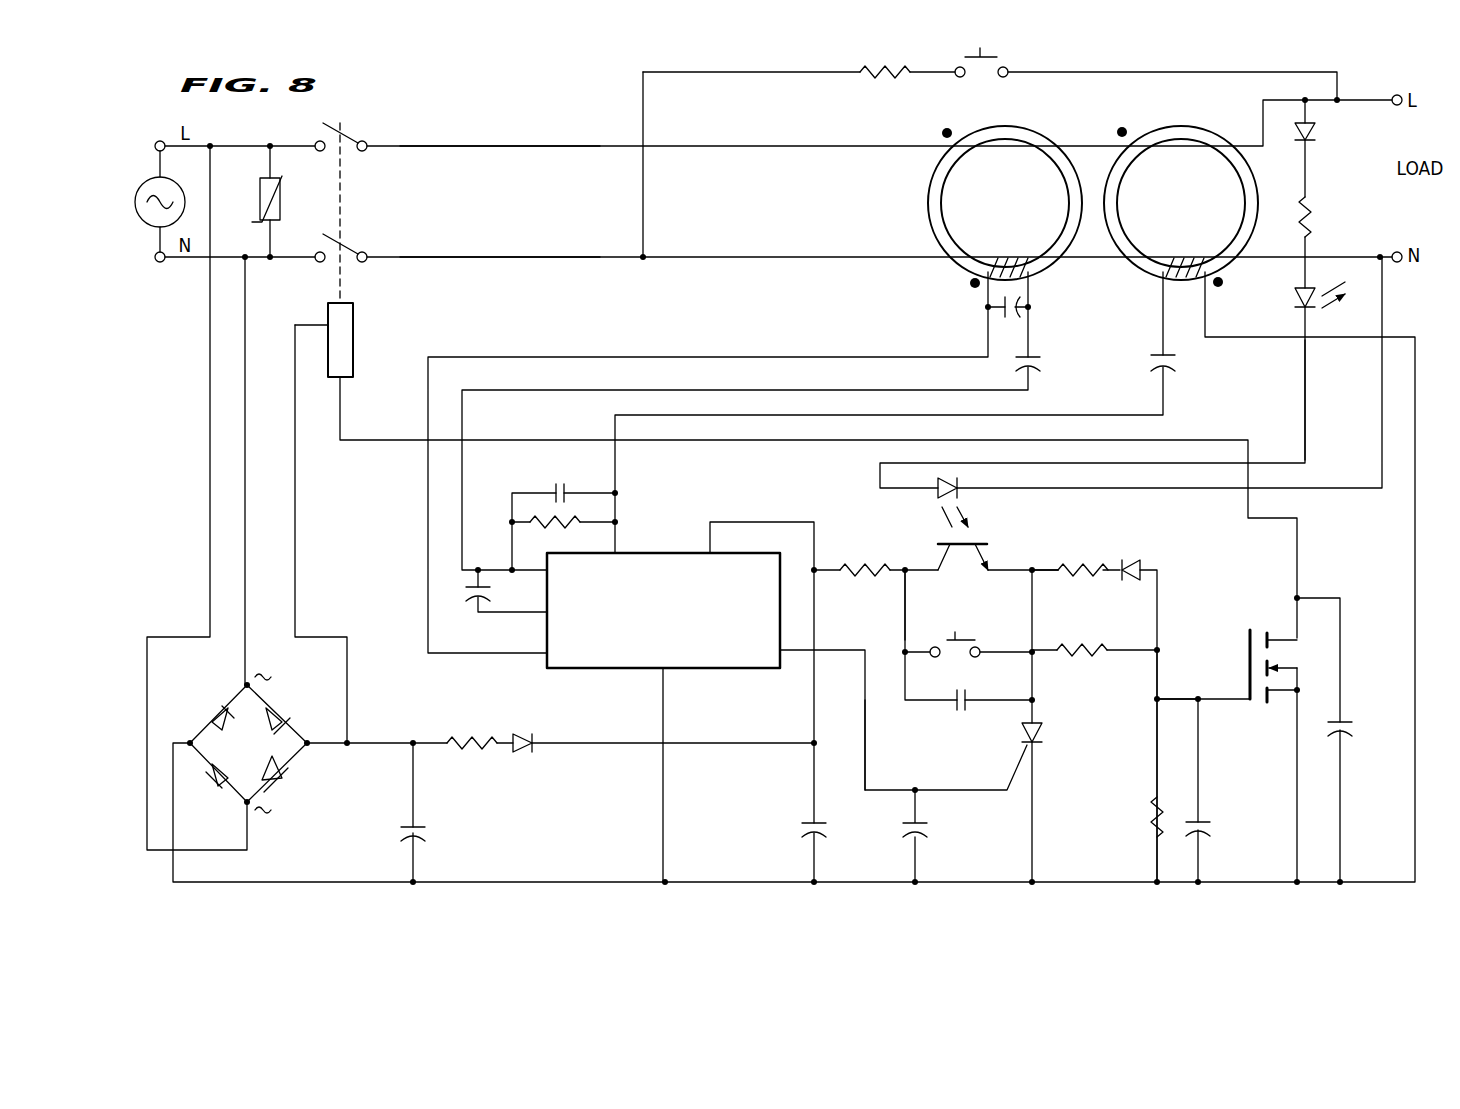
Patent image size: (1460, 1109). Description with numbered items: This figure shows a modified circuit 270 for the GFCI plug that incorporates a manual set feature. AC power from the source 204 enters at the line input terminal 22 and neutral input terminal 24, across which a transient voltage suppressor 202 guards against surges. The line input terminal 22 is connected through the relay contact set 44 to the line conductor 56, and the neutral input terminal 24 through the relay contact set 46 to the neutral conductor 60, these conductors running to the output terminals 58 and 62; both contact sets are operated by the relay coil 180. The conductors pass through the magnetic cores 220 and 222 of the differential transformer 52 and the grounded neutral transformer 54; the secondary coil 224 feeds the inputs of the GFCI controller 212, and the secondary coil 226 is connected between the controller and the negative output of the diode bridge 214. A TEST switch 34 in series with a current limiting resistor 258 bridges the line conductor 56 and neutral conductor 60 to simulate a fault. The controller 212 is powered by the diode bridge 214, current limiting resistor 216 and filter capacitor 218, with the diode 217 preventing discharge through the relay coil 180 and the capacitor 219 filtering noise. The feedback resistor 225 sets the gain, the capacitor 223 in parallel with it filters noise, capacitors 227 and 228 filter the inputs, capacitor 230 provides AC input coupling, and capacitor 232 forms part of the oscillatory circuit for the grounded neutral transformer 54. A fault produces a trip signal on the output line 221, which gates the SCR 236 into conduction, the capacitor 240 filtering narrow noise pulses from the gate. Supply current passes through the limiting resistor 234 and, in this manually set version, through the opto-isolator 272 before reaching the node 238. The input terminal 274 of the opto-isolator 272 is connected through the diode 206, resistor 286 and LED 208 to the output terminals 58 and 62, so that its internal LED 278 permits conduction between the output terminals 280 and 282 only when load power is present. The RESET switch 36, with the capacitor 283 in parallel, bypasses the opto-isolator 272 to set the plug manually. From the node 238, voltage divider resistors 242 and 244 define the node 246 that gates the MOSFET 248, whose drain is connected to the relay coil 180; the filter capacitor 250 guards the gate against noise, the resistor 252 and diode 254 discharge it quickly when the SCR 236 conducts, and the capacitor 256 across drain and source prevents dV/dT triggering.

The line input terminal 22 is at (152, 146).
The neutral input terminal 24 is at (156, 263).
The AC source 204 is at (142, 221).
The transient voltage suppressor 202 is at (260, 198).
The relay contact set 44 is at (373, 128).
The relay contact set 46 is at (363, 235).
The line conductor 56 is at (483, 148).
The neutral conductor 60 is at (514, 256).
The modified circuit 270 is at (526, 98).
The relay coil 180 is at (353, 324).
The current limiting resistor 258 is at (875, 82).
The TEST switch 34 is at (1005, 78).
The differential transformer 52 is at (920, 203).
The grounded neutral transformer 54 is at (1205, 123).
The output terminal 58 is at (1395, 94).
The output terminal 62 is at (1397, 263).
The diode 206 is at (1316, 132).
The resistor 286 is at (1316, 215).
The LED 208 is at (1296, 306).
The magnetic core 220 is at (955, 170).
The magnetic core 222 is at (1125, 164).
The secondary coil 224 is at (1018, 260).
The secondary coil 226 is at (1184, 261).
The capacitor 227 is at (1022, 310).
The capacitor 230 is at (1042, 368).
The capacitor 232 is at (1158, 354).
The input terminal 274 is at (1303, 388).
The capacitor 223 is at (550, 484).
The feedback resistor 225 is at (538, 526).
The GFCI controller 212 is at (662, 552).
The capacitor 228 is at (476, 604).
The opto-isolator 272 is at (925, 528).
The LED 278 is at (960, 493).
The output terminal 280 is at (992, 567).
The resistor 252 is at (1090, 560).
The diode 254 is at (1136, 558).
The MOSFET 248 is at (1253, 617).
The limiting resistor 234 is at (868, 576).
The output terminal 282 is at (932, 572).
The RESET switch 36 is at (970, 638).
The node 238 is at (1046, 575).
The node 246 is at (1160, 697).
The resistor 242 is at (1097, 662).
The silicon controlled rectifier 236 is at (1043, 736).
The output line 221 is at (865, 764).
The capacitor 283 is at (965, 715).
The capacitor 256 is at (1348, 720).
The diode bridge 214 is at (233, 752).
The capacitor 219 is at (405, 821).
The current limiting resistor 216 is at (466, 750).
The diode 217 is at (535, 746).
The filter capacitor 218 is at (802, 822).
The capacitor 240 is at (903, 834).
The resistor 244 is at (1153, 820).
The filter capacitor 250 is at (1205, 820).